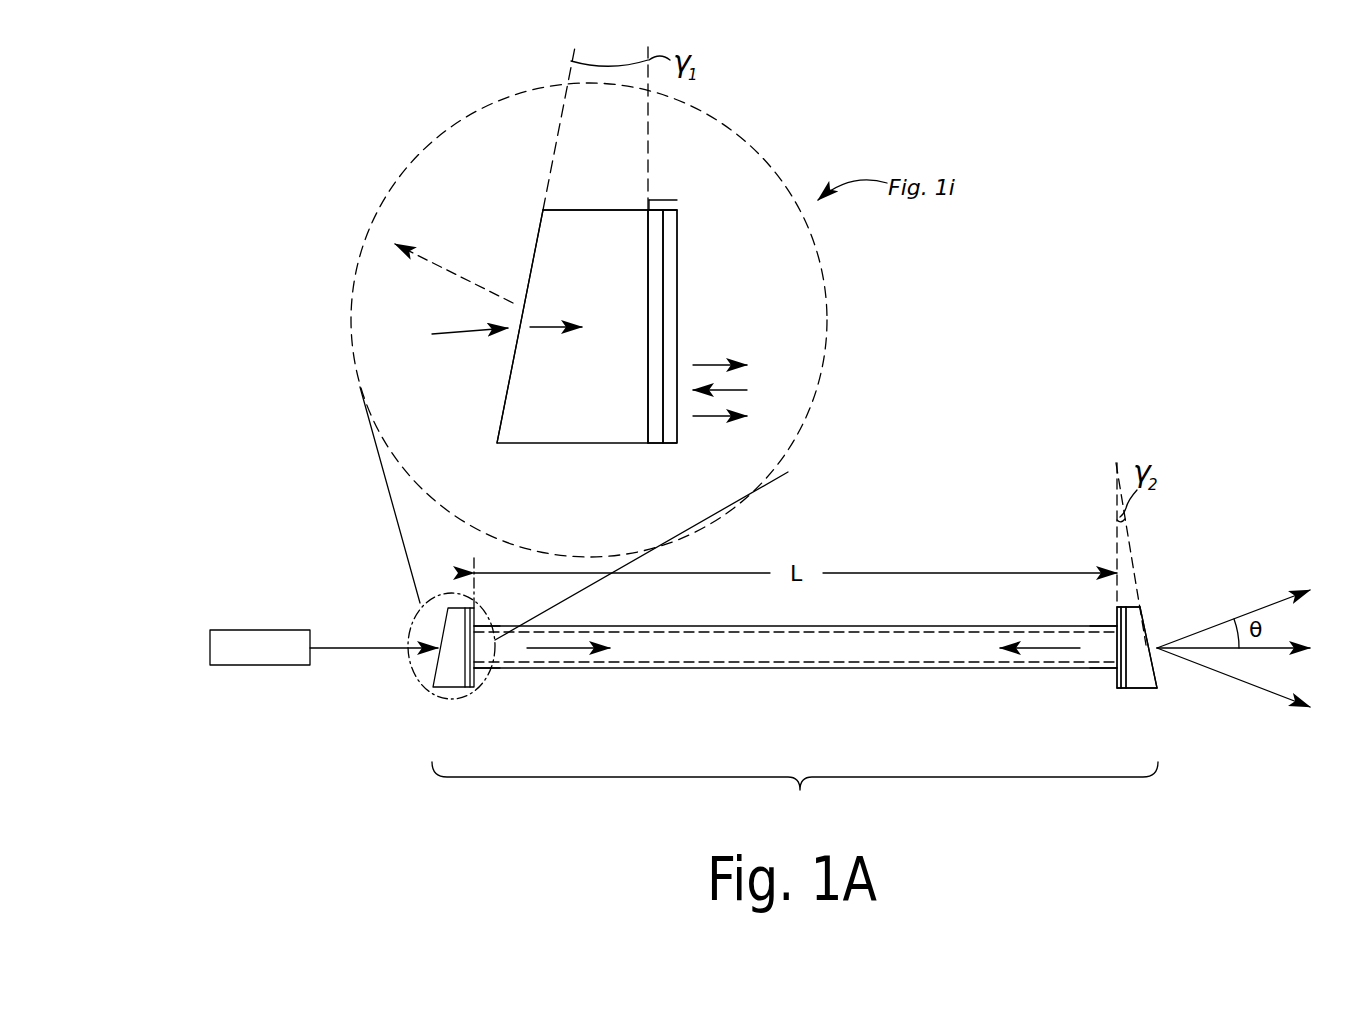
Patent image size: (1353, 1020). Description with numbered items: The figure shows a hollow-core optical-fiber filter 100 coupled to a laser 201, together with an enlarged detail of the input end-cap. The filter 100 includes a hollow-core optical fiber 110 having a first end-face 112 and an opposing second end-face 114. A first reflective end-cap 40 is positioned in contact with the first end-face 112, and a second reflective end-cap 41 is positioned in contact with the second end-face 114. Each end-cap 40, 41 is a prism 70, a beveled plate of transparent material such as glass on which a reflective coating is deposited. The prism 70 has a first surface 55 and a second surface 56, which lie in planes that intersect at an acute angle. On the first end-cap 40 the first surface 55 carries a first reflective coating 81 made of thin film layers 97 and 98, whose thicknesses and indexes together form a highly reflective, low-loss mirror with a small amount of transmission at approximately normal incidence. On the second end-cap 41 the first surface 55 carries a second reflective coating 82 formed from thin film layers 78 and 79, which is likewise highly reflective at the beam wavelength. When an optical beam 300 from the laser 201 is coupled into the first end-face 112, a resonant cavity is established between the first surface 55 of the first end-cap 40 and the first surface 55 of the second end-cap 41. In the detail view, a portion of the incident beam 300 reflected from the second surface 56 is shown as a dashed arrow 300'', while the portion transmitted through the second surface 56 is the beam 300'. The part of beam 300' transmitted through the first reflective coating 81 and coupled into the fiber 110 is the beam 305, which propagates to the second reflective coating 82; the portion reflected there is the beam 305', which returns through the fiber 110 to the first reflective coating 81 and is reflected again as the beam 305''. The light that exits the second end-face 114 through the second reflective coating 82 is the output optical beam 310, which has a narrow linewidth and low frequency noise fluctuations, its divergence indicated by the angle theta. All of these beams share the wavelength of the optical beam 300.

In FIG. 1i, the first reflective end-cap 40 is at (497, 453).
In FIG. 1A, the first reflective end-cap 40 is at (433, 705).
In FIG. 1A, the second reflective end-cap 41 is at (1157, 705).
In FIG. 1i, the first surface 55 is at (647, 387).
In FIG. 1A, the first surface 55 is at (1128, 640).
In FIG. 1i, the second surface 56 is at (510, 387).
In FIG. 1A, the second surface 56 is at (1160, 672).
In FIG. 1i, the prism 70 is at (578, 210).
In FIG. 1A, the prism 70 is at (1137, 613).
In FIG. 1A, the thin film layer 78 is at (1118, 680).
In FIG. 1A, the thin film layer 79 is at (1124, 604).
In FIG. 1i, the first reflective coating 81 is at (657, 197).
In FIG. 1A, the second reflective coating 82 is at (1123, 593).
In FIG. 1i, the thin film layer 97 is at (670, 287).
In FIG. 1i, the thin film layer 98 is at (657, 249).
In FIG. 1A, the hollow-core optical-fiber filter 100 is at (795, 798).
In FIG. 1A, the hollow-core optical fiber 110 is at (795, 647).
In FIG. 1A, the first end-face 112 is at (480, 626).
In FIG. 1A, the second end-face 114 is at (1115, 628).
In FIG. 1A, the laser 201 is at (245, 645).
In FIG. 1i, the optical beam 300 is at (459, 356).
In FIG. 1A, the optical beam 300 is at (374, 620).
In FIG. 1i, the transmitted optical beam 300' is at (564, 355).
In FIG. 1i, the reflected optical beam 300'' is at (456, 268).
In FIG. 1i, the optical beam 305 is at (731, 339).
In FIG. 1A, the optical beam 305 is at (568, 675).
In FIG. 1i, the reflected optical beam 305' is at (755, 367).
In FIG. 1A, the reflected optical beam 305' is at (1040, 680).
In FIG. 1i, the reflected optical beam 305'' is at (728, 443).
In FIG. 1A, the output optical beam 310 is at (1245, 706).